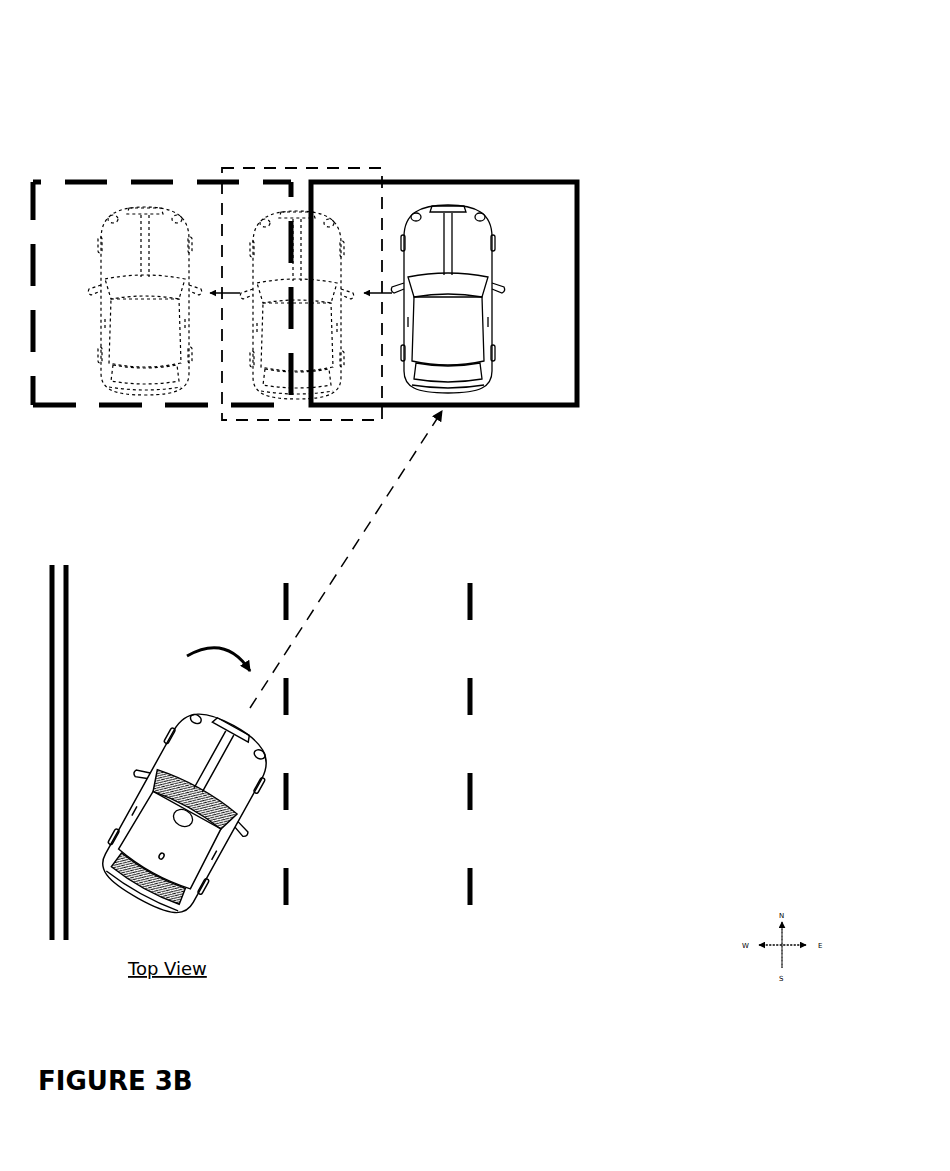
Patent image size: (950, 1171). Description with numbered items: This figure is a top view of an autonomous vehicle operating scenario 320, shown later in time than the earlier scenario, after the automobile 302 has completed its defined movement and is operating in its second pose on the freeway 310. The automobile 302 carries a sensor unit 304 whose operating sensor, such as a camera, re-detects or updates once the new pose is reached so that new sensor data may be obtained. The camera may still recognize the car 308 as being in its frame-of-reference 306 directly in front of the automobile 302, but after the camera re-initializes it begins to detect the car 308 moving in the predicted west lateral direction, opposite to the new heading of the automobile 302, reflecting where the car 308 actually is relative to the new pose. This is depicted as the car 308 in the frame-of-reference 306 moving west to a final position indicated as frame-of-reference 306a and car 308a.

The scenario 320 is at (134, 73).
The final position of frame-of-reference 306a is at (190, 174).
The frame-of-reference 306 is at (597, 193).
The car 308 is at (506, 333).
The final position of car 308a is at (88, 360).
The freeway 310 is at (452, 557).
The automobile 302 is at (179, 736).
The sensor unit 304 is at (171, 818).